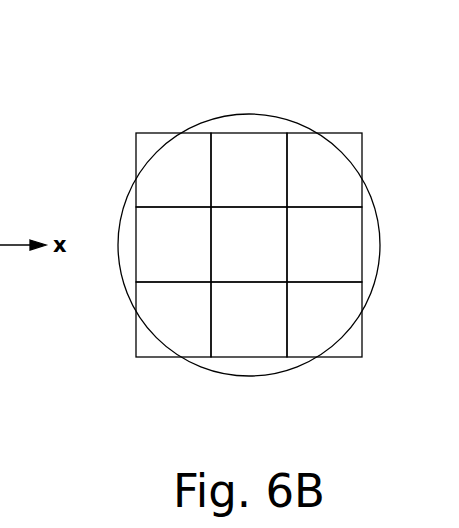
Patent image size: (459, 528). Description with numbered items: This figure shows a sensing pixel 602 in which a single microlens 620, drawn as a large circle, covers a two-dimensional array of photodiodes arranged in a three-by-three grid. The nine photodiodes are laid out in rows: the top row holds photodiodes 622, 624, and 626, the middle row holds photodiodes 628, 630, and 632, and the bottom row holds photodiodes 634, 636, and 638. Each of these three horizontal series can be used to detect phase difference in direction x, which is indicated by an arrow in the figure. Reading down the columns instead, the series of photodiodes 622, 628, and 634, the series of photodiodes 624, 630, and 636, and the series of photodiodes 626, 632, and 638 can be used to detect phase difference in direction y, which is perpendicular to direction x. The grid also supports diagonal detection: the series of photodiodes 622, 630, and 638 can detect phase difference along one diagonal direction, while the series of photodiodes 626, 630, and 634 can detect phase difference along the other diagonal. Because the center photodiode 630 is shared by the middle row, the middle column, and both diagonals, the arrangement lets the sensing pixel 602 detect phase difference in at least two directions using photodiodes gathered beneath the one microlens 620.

The sensing pixel 602 is at (117, 42).
The microlens 620 is at (268, 113).
The photodiode 622 is at (145, 150).
The photodiode 624 is at (249, 170).
The photodiode 626 is at (352, 142).
The photodiode 628 is at (173, 244).
The photodiode 630 is at (249, 244).
The photodiode 632 is at (324, 244).
The photodiode 634 is at (145, 347).
The photodiode 636 is at (249, 319).
The photodiode 638 is at (352, 348).